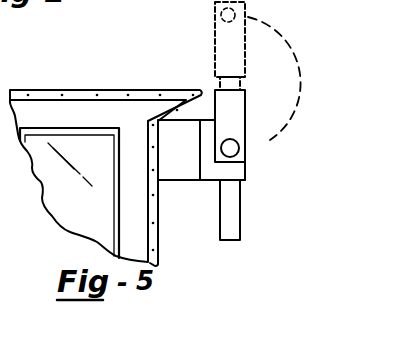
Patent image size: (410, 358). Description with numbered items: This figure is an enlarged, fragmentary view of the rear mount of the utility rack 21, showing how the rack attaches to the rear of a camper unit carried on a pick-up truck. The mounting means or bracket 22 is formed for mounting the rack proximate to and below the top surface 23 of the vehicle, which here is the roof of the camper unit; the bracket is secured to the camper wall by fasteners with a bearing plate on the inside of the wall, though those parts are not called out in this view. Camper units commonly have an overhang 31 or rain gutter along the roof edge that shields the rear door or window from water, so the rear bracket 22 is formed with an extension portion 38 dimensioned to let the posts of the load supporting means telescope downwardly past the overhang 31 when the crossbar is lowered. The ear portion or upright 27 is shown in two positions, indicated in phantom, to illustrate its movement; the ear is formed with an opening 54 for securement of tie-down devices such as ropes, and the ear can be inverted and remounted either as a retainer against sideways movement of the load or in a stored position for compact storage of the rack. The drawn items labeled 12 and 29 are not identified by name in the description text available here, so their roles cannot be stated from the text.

The window pane 12 is at (71, 198).
The utility rack 21 is at (338, 67).
The mounting bracket 22 is at (185, 185).
The top surface 23 is at (60, 90).
The ear portion 27 is at (245, 11).
The lower flange 29 is at (158, 232).
The overhang 31 is at (152, 108).
The extension portion 38 is at (193, 121).
The opening 54 is at (236, 155).